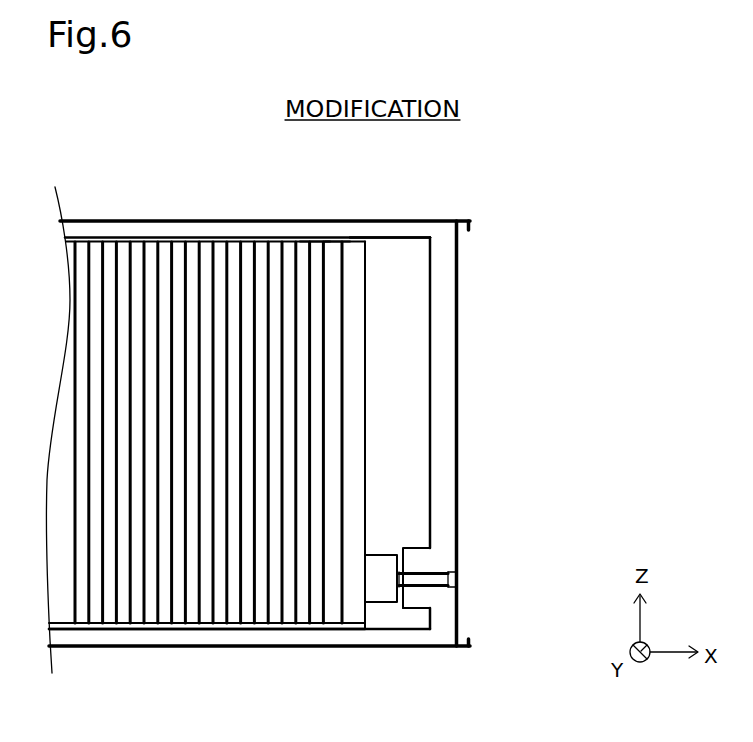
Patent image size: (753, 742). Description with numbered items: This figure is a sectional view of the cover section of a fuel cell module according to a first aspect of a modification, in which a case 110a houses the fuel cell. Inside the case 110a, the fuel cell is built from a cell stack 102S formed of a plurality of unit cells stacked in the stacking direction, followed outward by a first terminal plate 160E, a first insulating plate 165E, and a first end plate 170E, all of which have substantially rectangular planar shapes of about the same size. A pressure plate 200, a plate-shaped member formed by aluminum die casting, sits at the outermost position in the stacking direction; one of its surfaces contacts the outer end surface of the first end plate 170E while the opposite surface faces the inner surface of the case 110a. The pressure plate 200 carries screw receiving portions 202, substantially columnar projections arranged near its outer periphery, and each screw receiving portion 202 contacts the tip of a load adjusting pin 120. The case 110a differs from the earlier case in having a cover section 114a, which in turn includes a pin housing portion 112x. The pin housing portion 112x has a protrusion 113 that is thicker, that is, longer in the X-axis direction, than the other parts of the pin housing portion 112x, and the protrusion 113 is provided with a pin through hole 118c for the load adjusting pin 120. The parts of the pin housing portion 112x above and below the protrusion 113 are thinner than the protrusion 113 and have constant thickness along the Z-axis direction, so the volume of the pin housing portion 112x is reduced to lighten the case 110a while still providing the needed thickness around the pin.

The case 110a is at (85, 219).
The cover section 114a is at (458, 325).
The pin housing portion 112x is at (438, 400).
The first terminal plate 160E is at (298, 240).
The first insulating plate 165E is at (316, 241).
The first end plate 170E is at (333, 241).
The pressure plate 200 is at (357, 240).
The screw receiving portion 202 is at (383, 555).
The protrusion 113 is at (415, 559).
The load adjusting pin 120 is at (437, 571).
The pin through hole 118c is at (437, 588).
The cell stack 102S is at (186, 629).